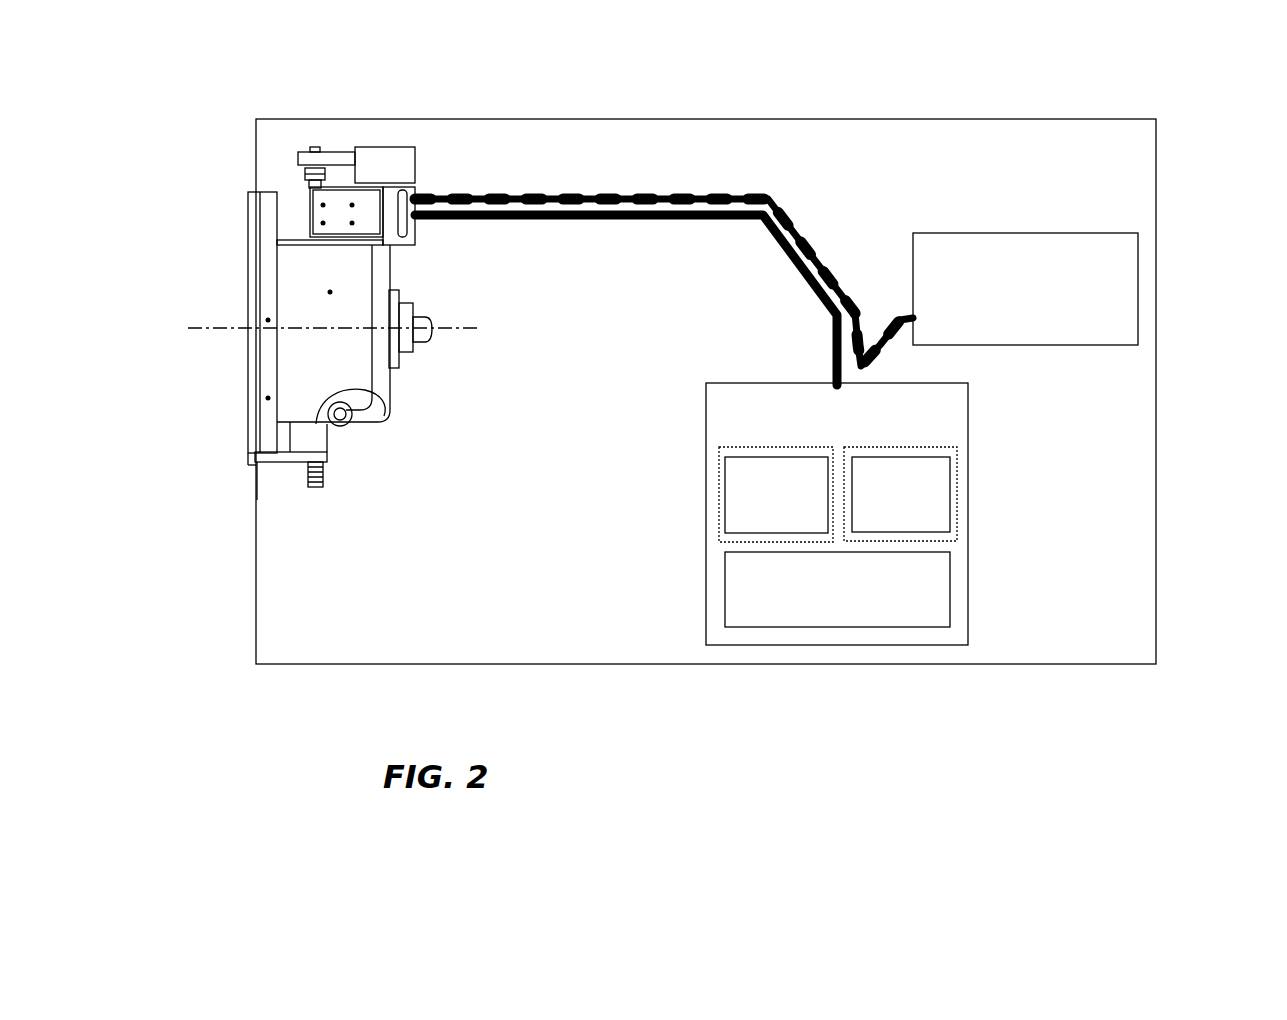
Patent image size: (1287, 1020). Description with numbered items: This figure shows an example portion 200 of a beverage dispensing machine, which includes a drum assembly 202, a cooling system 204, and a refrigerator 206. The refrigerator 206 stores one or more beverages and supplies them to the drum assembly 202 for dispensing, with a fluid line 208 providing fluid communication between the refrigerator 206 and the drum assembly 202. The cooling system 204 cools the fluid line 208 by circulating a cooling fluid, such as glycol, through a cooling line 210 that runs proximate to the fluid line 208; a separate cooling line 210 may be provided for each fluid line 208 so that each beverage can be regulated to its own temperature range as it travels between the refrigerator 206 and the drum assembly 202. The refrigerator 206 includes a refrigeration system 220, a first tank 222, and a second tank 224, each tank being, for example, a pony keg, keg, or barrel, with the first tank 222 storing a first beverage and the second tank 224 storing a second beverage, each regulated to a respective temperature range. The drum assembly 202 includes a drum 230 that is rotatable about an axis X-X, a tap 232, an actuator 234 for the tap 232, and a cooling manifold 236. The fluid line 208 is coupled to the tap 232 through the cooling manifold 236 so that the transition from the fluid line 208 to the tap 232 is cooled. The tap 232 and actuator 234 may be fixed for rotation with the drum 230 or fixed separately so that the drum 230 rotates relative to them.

The example portion 200 is at (1156, 158).
The drum assembly 202 is at (248, 250).
The cooling system 204 is at (1138, 288).
The refrigerator 206 is at (968, 420).
The fluid line 208 is at (588, 220).
The cooling line 210 is at (538, 195).
The refrigeration system 220 is at (950, 607).
The first tank 222 is at (950, 492).
The second tank 224 is at (720, 495).
The drum 230 is at (275, 380).
The tap 232 is at (308, 175).
The actuator 234 is at (380, 147).
The cooling manifold 236 is at (417, 222).